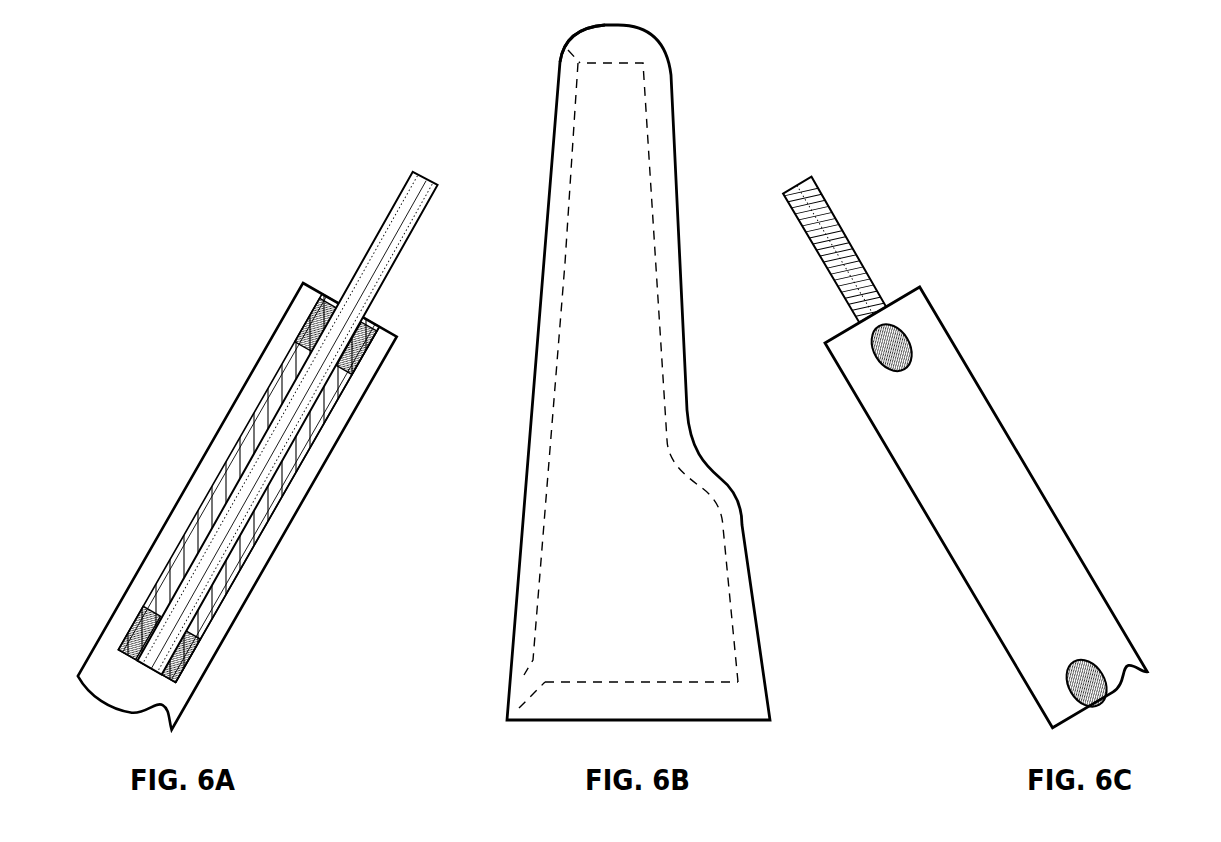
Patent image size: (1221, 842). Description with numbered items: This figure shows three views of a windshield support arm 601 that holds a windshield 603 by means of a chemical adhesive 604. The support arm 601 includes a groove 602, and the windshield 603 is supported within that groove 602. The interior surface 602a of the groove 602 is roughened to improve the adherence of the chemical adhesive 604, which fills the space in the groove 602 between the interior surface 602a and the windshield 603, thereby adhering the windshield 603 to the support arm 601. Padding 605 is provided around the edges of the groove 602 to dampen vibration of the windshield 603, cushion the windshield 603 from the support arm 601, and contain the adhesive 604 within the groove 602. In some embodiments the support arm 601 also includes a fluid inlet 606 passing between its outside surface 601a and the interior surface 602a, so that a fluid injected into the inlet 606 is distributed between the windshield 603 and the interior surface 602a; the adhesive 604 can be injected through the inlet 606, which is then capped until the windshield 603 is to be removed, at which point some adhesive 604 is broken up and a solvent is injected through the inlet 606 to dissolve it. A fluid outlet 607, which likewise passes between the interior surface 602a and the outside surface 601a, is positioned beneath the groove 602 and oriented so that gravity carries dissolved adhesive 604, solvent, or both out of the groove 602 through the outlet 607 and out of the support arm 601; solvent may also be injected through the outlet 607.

In FIG. 6A, the support arm 601 is at (260, 455).
In FIG. 6B, the support arm 601 is at (502, 150).
In FIG. 6C, the support arm 601 is at (984, 442).
In FIG. 6A, the outside surface 601a is at (233, 404).
In FIG. 6A, the groove 602 is at (273, 367).
In FIG. 6A, the interior surface 602a is at (235, 459).
In FIG. 6A, the windshield 603 is at (360, 263).
In FIG. 6C, the windshield 603 is at (848, 239).
In FIG. 6A, the chemical adhesive 604 is at (299, 464).
In FIG. 6A, the padding 605 is at (361, 368).
In FIG. 6B, the padding 605 is at (731, 698).
In FIG. 6B, the fluid inlet 606 is at (563, 58).
In FIG. 6C, the fluid inlet 606 is at (907, 343).
In FIG. 6B, the fluid outlet 607 is at (507, 718).
In FIG. 6C, the fluid outlet 607 is at (1103, 668).